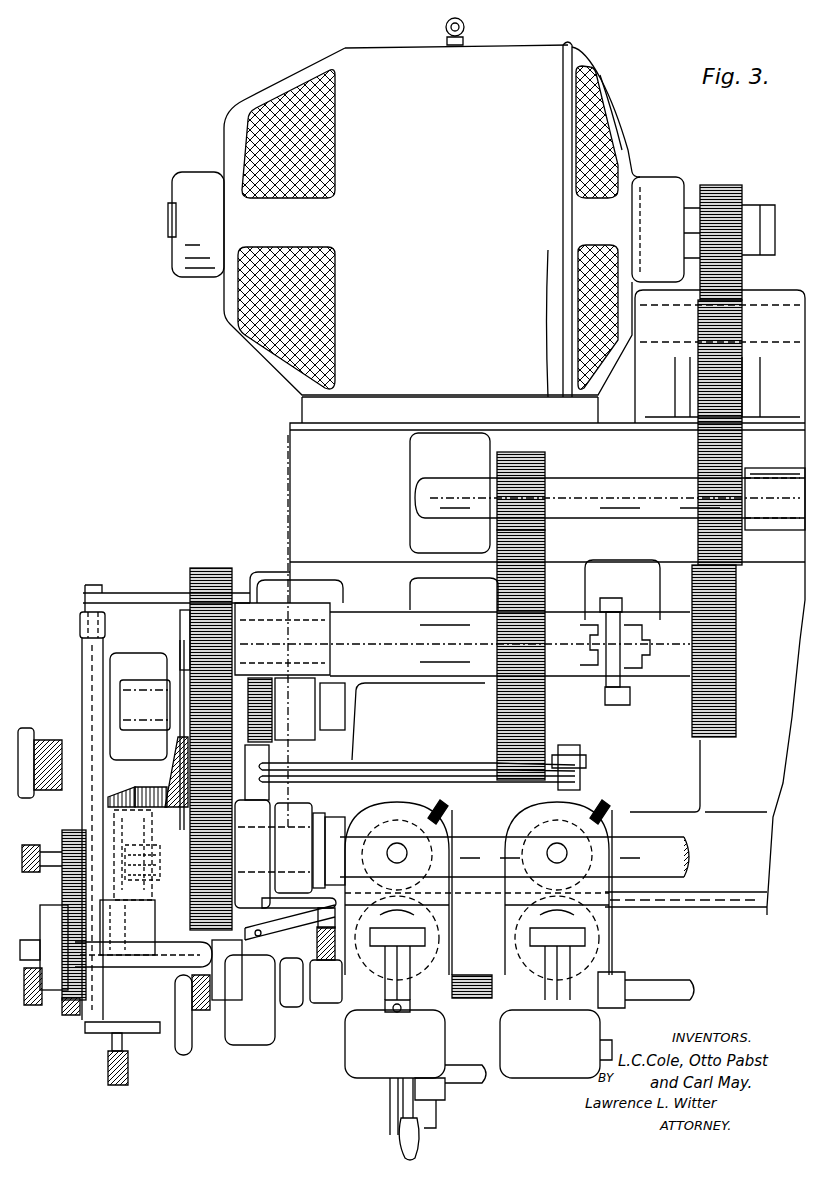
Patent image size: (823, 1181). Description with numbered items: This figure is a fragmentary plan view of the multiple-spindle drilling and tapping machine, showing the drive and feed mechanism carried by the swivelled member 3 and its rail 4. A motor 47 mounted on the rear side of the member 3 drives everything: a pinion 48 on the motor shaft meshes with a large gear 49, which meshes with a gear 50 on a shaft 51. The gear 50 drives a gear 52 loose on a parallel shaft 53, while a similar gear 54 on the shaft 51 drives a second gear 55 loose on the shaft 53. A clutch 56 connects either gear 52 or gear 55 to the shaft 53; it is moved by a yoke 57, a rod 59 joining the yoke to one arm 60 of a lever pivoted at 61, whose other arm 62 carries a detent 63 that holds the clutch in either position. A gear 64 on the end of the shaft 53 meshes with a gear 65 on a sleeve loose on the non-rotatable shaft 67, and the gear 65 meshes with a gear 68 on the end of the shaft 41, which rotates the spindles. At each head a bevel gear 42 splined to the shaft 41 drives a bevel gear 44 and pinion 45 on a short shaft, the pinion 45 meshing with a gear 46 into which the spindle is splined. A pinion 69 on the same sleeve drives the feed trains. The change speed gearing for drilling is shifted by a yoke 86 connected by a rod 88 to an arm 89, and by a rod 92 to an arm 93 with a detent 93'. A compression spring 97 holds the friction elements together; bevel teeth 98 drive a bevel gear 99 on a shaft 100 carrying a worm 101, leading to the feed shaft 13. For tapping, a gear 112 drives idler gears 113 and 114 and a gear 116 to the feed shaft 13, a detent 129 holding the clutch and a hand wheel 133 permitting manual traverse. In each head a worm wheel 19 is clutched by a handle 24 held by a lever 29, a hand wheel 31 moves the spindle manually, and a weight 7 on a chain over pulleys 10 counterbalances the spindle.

The member 3 is at (305, 468).
The rail 4 is at (738, 908).
The weight 7 is at (360, 1078).
The pulleys 10 is at (388, 1046).
The feed shaft 13 is at (656, 1002).
The worm wheel 19 is at (486, 1000).
The handle 24 is at (418, 1144).
The lever 29 is at (388, 1124).
The hand wheel 31 is at (472, 1083).
The shaft 41 is at (646, 842).
The bevel gear 42 is at (450, 816).
The bevel gear 44 is at (505, 930).
The pinion 45 is at (477, 862).
The gear 46 is at (505, 940).
The motor 47 is at (548, 52).
The pinion 48 is at (728, 185).
The large gear 49 is at (745, 288).
The gear 50 is at (748, 462).
The shaft 51 is at (655, 482).
The gear 52 is at (738, 612).
The shaft 53 is at (360, 614).
The gear 54 is at (546, 462).
The gear 55 is at (546, 560).
The clutch 56 is at (640, 612).
The yoke 57 is at (632, 703).
The rod 59 is at (145, 593).
The arm 60 is at (80, 628).
The pivot 61 is at (82, 700).
The arm 62 is at (118, 938).
The detent 63 is at (212, 992).
The gear 64 is at (212, 568).
The gear 65 is at (176, 750).
The non-rotatable shaft 67 is at (358, 692).
The gear 68 is at (218, 930).
The pinion 69 is at (260, 678).
The yoke 86 is at (582, 772).
The rod 88 is at (404, 790).
The arm 89 is at (306, 930).
The rod 92 is at (386, 764).
The arm 93 is at (290, 934).
The detent 93' is at (326, 965).
The compression spring 97 is at (52, 742).
The bevel gear teeth 98 is at (166, 790).
The bevel gear 99 is at (120, 786).
The shaft 100 is at (162, 882).
The worm 101 is at (118, 842).
The gear 112 is at (64, 836).
The idler gear 113 is at (56, 935).
The idler gear 114 is at (58, 1002).
The gear 116 is at (68, 1017).
The detent 129 is at (106, 1068).
The hand wheel 133 is at (188, 1058).